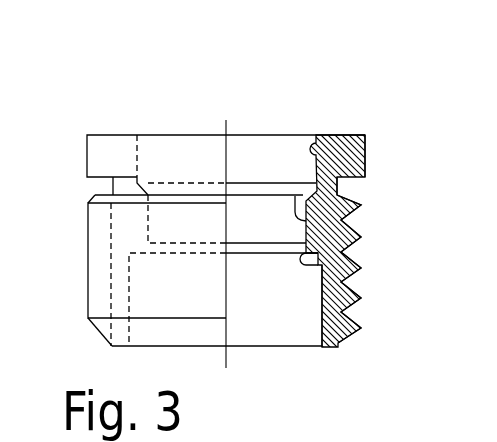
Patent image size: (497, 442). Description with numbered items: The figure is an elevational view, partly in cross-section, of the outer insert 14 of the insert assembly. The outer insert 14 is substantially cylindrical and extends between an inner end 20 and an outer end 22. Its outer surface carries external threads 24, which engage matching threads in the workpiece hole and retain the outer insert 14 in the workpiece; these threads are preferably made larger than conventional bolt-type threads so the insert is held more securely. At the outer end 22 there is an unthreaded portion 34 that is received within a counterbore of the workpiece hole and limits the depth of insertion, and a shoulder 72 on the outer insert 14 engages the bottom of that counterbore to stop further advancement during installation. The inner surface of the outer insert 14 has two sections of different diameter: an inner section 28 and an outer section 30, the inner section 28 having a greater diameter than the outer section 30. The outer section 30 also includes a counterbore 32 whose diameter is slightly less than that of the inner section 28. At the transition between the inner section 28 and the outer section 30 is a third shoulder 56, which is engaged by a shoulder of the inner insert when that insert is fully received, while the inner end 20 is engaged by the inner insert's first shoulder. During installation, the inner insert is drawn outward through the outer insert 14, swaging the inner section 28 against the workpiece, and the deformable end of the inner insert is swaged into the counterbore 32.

The outer insert 14 is at (88, 262).
The inner end 20 is at (187, 348).
The outer end 22 is at (145, 135).
The external threads 24 is at (358, 235).
The inner section 28 is at (320, 331).
The outer section 30 is at (295, 196).
The counterbore 32 is at (312, 138).
The unthreaded portion 34 is at (365, 150).
The third shoulder 56 is at (343, 273).
The shoulder 72 is at (350, 197).